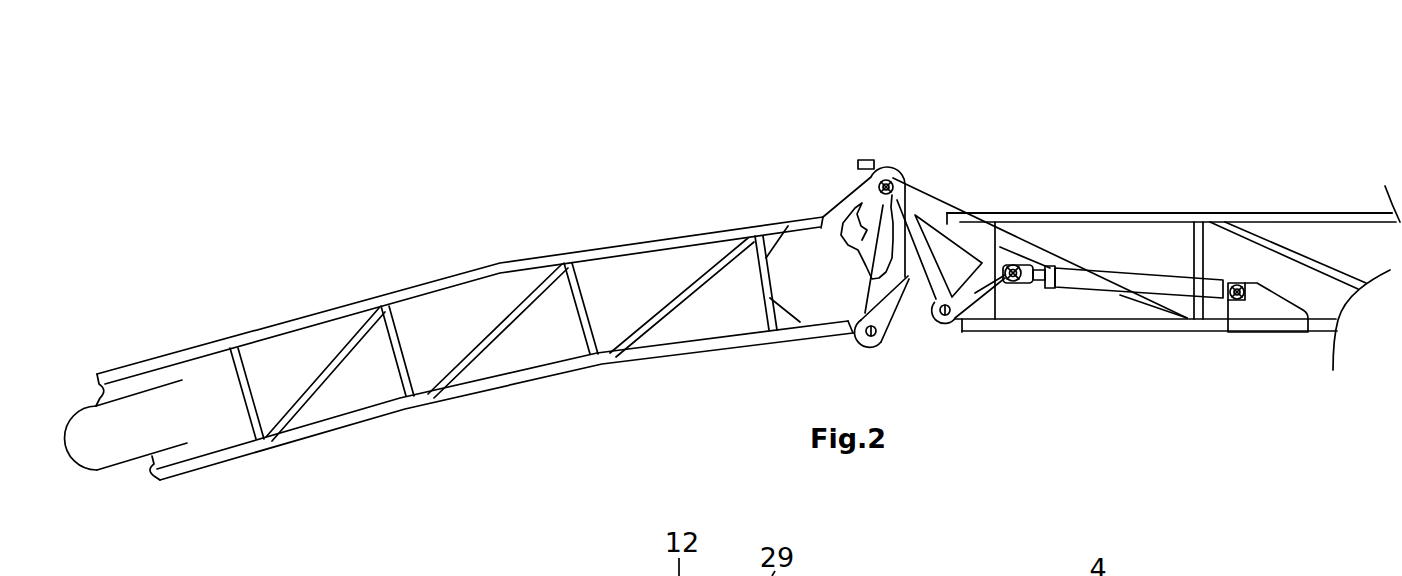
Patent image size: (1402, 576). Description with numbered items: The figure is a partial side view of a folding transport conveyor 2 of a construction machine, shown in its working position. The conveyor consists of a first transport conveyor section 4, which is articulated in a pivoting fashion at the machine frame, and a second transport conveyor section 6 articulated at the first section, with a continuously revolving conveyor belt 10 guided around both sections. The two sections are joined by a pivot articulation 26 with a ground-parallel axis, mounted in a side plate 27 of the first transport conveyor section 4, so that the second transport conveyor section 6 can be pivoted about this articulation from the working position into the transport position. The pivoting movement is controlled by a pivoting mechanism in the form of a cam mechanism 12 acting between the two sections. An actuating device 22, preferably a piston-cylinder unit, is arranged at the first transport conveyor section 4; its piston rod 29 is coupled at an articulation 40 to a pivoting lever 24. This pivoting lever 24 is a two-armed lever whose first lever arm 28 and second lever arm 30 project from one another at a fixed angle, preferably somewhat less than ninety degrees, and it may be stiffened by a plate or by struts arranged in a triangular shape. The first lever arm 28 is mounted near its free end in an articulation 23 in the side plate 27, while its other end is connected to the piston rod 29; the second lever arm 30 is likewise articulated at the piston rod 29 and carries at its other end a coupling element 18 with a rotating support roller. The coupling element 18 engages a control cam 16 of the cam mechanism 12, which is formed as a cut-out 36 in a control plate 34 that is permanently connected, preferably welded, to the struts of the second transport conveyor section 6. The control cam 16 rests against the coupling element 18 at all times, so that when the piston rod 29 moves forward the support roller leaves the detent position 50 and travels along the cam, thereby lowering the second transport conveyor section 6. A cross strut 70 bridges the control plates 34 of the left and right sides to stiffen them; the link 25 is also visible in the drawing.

The folding transport conveyor 2 is at (954, 167).
The first transport conveyor section 4 is at (1135, 220).
The second transport conveyor section 6 is at (600, 253).
The conveyor belt 10 is at (96, 475).
The cam mechanism 12 is at (897, 128).
The control cam 16 is at (857, 197).
The coupling element 18 is at (888, 178).
The actuating device 22 is at (1135, 285).
The articulation 23 is at (948, 322).
The pivoting lever 24 is at (919, 152).
The link 25 is at (925, 282).
The pivot articulation 26 is at (872, 346).
The side plate 27 is at (897, 318).
The first lever arm 28 is at (977, 292).
The piston rod 29 is at (1047, 263).
The second lever arm 30 is at (962, 237).
The control plate 34 is at (843, 286).
The cut-out 36 is at (867, 227).
The articulation 40 is at (1017, 263).
The detent position 50 is at (850, 150).
The cross strut 70 is at (866, 158).